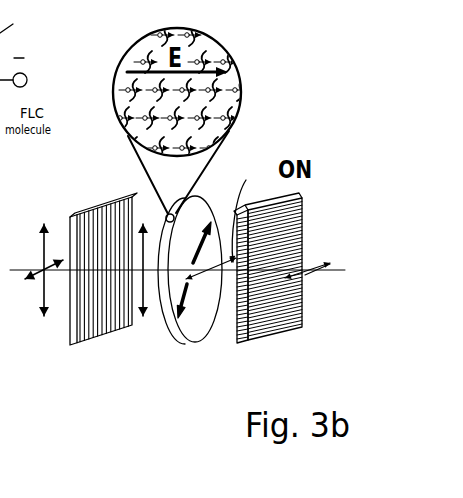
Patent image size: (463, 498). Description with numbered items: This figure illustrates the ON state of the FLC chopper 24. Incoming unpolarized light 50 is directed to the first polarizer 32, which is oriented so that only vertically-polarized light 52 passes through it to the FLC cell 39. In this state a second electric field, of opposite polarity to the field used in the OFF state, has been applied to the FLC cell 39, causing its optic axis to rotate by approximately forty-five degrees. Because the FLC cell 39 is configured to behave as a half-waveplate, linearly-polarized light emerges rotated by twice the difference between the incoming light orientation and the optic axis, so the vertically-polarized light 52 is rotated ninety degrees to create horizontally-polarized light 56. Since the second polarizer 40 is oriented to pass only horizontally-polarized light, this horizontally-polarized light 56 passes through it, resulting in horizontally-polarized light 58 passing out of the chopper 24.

The chopper 24 is at (141, 377).
The first polarizer 32 is at (113, 325).
The FLC cell 39 is at (205, 333).
The second polarizer 40 is at (272, 318).
The incoming unpolarized light 50 is at (38, 296).
The vertically-polarized light 52 is at (150, 300).
The horizontally-polarized light 56 is at (249, 210).
The horizontally-polarized light 58 is at (316, 268).